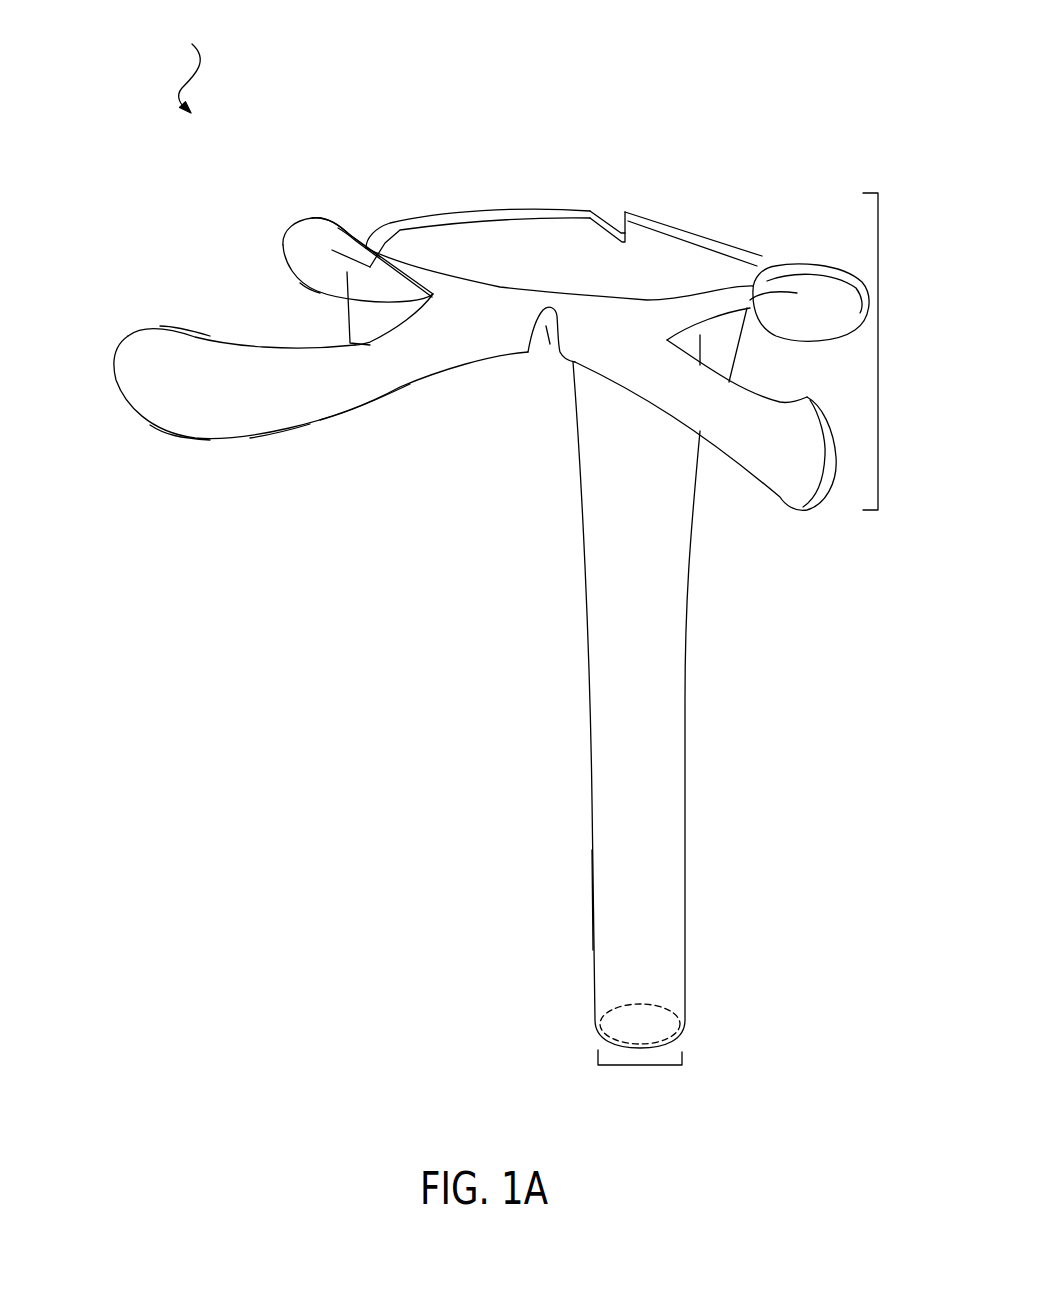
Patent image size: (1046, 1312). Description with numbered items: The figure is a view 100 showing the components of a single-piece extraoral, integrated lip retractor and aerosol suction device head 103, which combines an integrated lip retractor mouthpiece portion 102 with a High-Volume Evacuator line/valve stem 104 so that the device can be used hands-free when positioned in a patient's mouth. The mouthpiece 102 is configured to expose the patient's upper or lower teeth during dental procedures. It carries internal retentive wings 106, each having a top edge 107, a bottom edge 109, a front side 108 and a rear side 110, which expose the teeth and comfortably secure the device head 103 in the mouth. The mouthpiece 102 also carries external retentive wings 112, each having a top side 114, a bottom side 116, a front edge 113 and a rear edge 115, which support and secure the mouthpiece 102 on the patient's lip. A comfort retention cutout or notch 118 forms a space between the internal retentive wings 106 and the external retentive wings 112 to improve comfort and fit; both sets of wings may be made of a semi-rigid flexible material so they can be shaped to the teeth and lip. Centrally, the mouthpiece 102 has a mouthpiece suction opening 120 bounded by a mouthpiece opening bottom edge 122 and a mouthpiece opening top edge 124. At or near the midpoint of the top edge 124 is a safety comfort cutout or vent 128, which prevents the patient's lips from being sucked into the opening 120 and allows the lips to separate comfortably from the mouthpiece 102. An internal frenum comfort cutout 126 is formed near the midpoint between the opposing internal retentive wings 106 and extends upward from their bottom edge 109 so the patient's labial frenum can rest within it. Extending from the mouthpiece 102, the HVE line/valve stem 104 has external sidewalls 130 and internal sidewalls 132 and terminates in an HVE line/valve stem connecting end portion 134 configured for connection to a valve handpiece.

The view 100 is at (884, 92).
The integrated lip retractor mouthpiece portion 102 is at (878, 353).
The aerosol suction device head 103 is at (177, 64).
The HVE line/valve stem 104 is at (590, 745).
The internal retentive wings/tabs 106 is at (126, 342).
The top edge 107 is at (192, 333).
The front side 108 is at (212, 398).
The bottom edge 109 is at (353, 410).
The rear side 110 is at (268, 418).
The external retentive wings/tabs 112 is at (290, 232).
The front edge 113 is at (368, 247).
The top side 114 is at (340, 230).
The rear edge 115 is at (327, 295).
The bottom side 116 is at (313, 259).
The comfort retention cutout/notch 118 is at (348, 310).
The mouthpiece suction opening 120 is at (648, 260).
The mouthpiece opening bottom edge 122 is at (495, 287).
The mouthpiece opening top edge 124 is at (497, 213).
The internal frenum comfort cutout 126 is at (547, 343).
The safety comfort cutout/vent 128 is at (613, 215).
The external sidewalls 130 is at (613, 895).
The internal sidewalls 132 is at (603, 1038).
The HVE line/valve stem connecting end portion 134 is at (640, 1066).